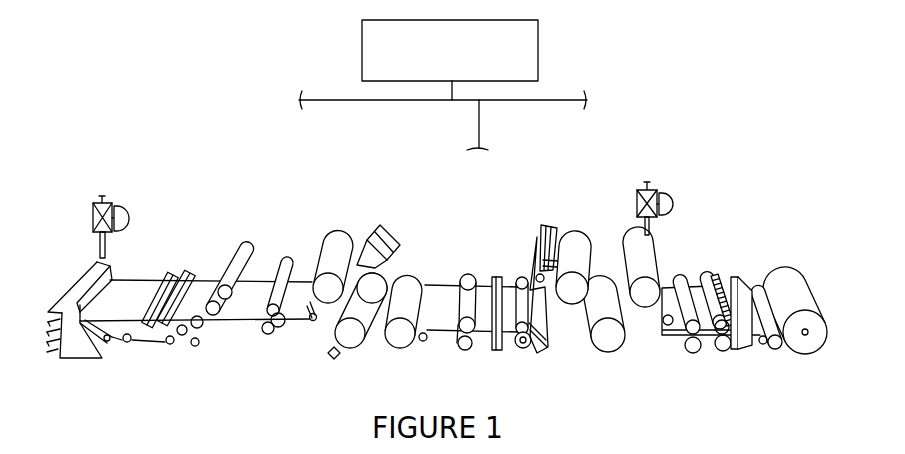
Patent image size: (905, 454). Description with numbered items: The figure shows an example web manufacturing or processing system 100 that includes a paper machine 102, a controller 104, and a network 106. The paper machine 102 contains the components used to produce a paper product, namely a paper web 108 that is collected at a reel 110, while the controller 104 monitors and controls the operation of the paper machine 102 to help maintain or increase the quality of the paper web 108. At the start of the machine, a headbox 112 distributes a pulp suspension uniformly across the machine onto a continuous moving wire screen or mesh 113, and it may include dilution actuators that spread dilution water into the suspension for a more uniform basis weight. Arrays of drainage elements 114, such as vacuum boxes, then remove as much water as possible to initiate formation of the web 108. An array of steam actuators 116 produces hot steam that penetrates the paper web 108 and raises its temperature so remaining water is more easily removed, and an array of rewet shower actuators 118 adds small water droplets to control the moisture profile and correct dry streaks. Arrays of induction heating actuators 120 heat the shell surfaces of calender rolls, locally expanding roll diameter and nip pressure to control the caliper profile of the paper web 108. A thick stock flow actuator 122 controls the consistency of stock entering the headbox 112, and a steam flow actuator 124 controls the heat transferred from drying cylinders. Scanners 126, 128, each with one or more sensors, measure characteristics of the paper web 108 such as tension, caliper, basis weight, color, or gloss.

The web manufacturing or processing system 100 is at (216, 42).
The paper machine 102 is at (258, 196).
The controller 104 is at (539, 51).
The network 106 is at (355, 101).
The paper web 108 is at (250, 321).
The reel 110 is at (810, 356).
The headbox 112 is at (63, 280).
The wire screen or mesh 113 is at (140, 343).
The drainage elements 114 is at (158, 334).
The steam actuators 116 is at (337, 364).
The rewet shower actuators 118 is at (545, 223).
The induction heating actuators 120 is at (733, 358).
The thick stock flow actuator 122 is at (118, 198).
The steam flow actuator 124 is at (658, 188).
The scanner 126 is at (498, 356).
The scanner 128 is at (733, 272).